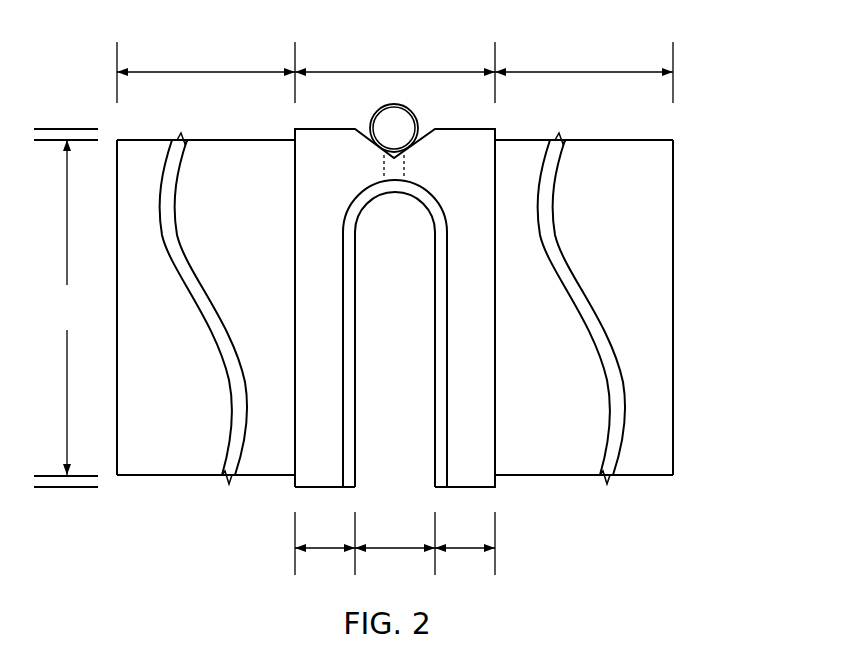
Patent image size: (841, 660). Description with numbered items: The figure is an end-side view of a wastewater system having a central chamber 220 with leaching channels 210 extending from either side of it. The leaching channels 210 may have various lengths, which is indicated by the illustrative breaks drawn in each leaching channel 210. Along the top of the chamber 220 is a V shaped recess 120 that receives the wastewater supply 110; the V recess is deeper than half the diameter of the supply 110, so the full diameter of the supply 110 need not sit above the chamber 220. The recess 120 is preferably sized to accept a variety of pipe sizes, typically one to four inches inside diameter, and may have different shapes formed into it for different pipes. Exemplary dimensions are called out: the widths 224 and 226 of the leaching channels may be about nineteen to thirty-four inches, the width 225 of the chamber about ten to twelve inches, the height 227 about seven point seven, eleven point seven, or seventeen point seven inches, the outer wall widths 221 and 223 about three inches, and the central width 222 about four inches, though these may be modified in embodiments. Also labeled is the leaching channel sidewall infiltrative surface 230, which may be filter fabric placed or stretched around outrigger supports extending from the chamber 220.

The supply 110 is at (405, 107).
The V shaped recess 120 is at (372, 143).
The leaching channels 210 is at (686, 280).
The chamber 220 is at (480, 470).
The dimension 221 is at (325, 543).
The dimension 222 is at (395, 543).
The dimension 223 is at (465, 543).
The dimension 224 is at (206, 72).
The dimension 225 is at (395, 72).
The dimension 226 is at (584, 72).
The dimension 227 is at (66, 308).
The leaching channel sidewall infiltrative surface 230 is at (642, 367).